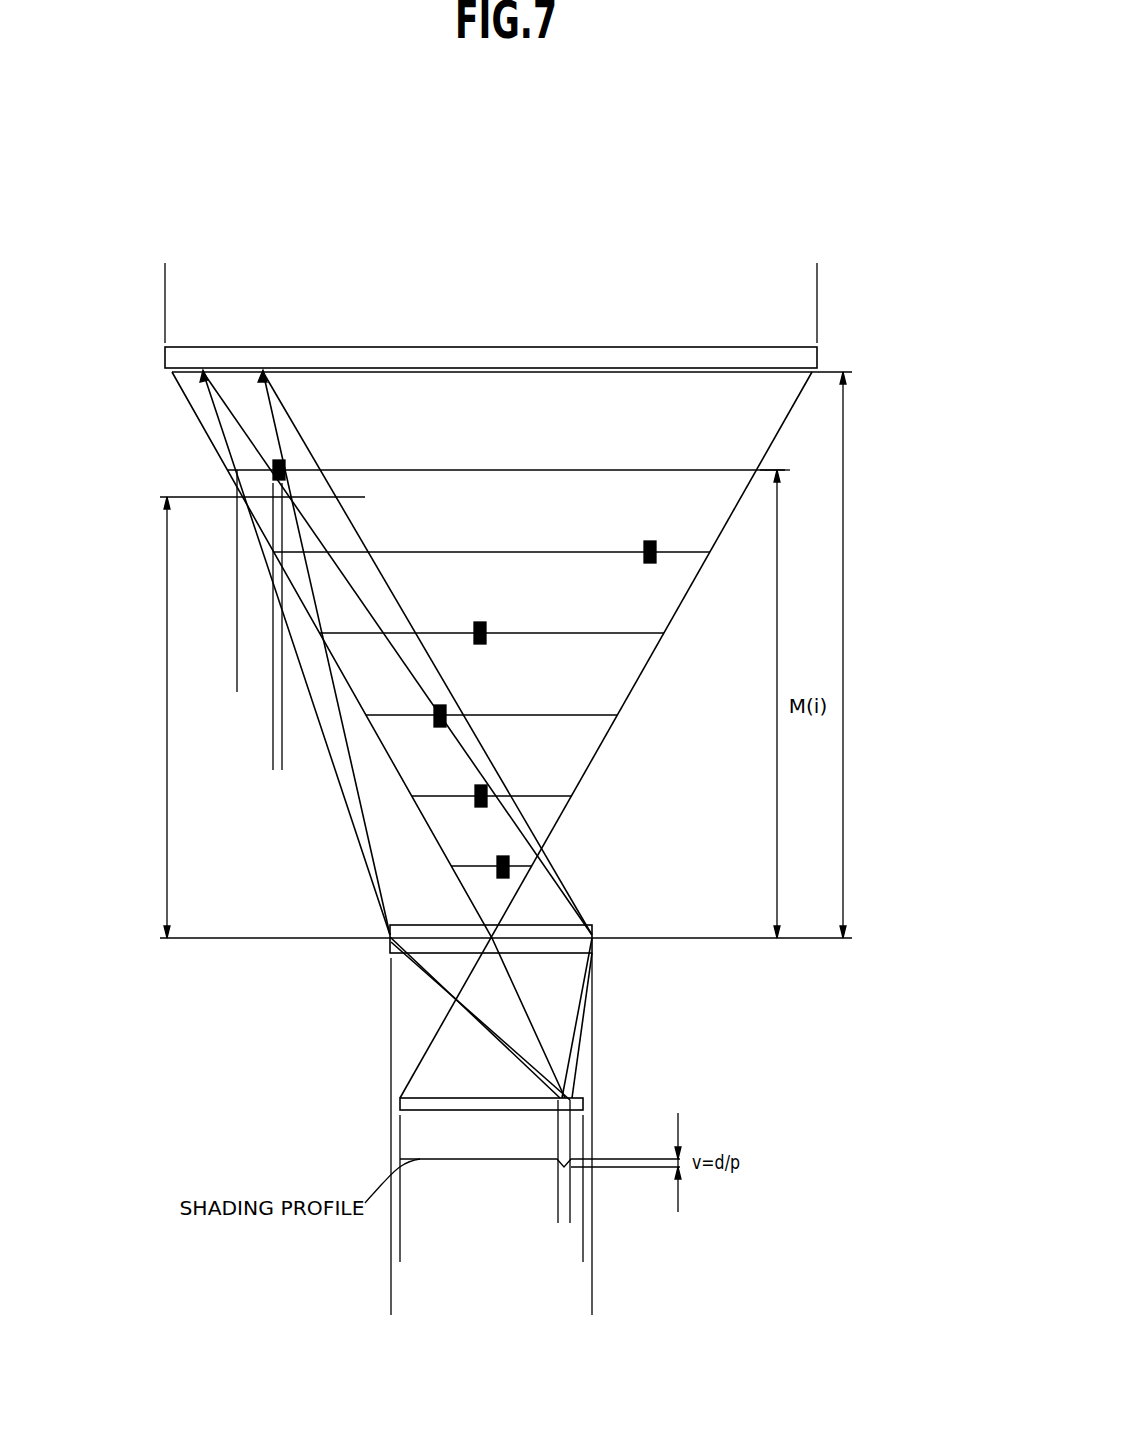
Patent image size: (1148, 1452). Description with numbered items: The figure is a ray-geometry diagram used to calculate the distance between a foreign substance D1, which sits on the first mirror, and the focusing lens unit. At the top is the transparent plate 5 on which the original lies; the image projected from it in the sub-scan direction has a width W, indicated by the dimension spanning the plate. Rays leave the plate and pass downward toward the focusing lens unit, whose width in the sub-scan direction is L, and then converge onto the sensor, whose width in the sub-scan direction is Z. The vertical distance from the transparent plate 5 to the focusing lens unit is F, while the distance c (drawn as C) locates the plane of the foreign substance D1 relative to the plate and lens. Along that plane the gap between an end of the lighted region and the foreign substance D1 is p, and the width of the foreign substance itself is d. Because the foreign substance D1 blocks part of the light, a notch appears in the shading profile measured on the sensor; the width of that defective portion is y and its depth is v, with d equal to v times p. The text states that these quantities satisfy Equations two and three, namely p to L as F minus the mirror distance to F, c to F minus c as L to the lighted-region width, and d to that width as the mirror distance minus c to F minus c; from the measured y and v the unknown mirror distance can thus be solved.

The transparent plate 5 is at (817, 356).
The foreign substance D1 is at (281, 460).
The width of projected image W is at (165, 273).
The distance between focusing lens unit and transparent plate F is at (853, 655).
The distance c C is at (496, 717).
The gap between end of lighted region and foreign substance p is at (315, 686).
The width of foreign substance d is at (322, 758).
The width of focusing lens unit L is at (592, 1308).
The width of sensor Z is at (400, 1258).
The width of defective portion of shading profile y is at (617, 1213).